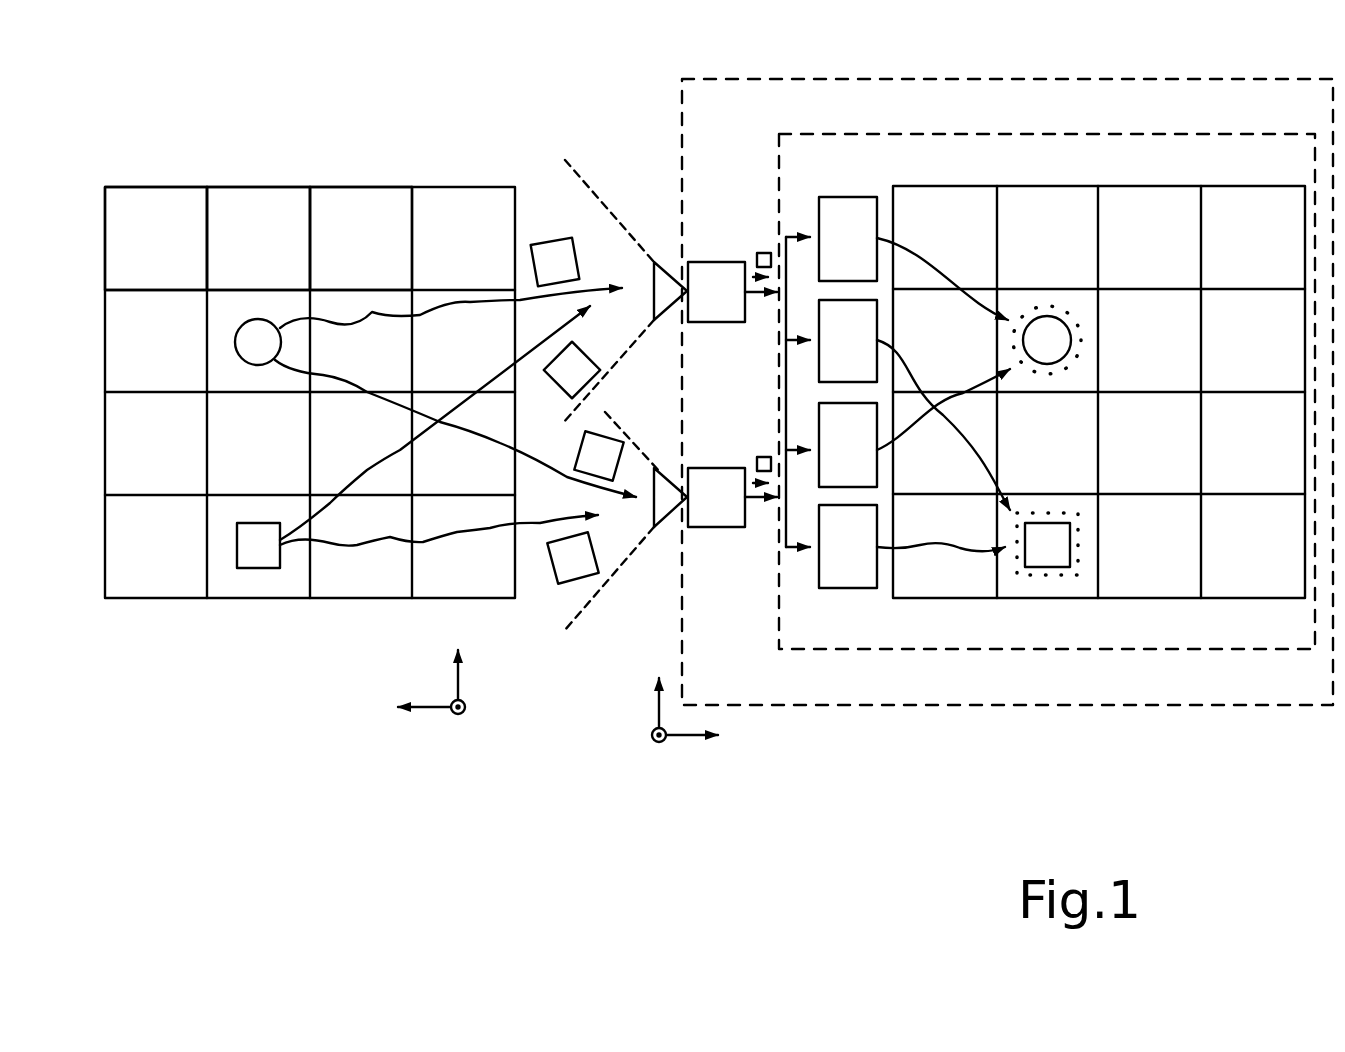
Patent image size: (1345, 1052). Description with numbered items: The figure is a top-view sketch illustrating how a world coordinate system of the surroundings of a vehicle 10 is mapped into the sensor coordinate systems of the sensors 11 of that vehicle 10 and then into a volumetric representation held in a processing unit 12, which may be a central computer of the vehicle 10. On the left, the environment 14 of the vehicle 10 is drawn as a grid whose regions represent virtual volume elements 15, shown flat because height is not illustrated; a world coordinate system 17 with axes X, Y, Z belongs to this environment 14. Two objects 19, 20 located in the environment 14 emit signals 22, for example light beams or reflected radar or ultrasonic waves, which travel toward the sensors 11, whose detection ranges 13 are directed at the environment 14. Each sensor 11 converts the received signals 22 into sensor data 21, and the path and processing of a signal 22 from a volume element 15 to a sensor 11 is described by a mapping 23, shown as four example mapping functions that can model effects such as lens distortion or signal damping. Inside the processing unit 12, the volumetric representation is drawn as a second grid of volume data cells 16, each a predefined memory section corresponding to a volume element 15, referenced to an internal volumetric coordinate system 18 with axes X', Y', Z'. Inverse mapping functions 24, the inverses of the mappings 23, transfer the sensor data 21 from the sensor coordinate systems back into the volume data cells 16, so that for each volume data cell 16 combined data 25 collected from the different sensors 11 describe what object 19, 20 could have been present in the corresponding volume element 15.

The vehicle 10 is at (932, 79).
The sensors 11 is at (727, 262).
The processing unit 12 is at (1090, 134).
The detection ranges 13 is at (612, 215).
The environment 14 is at (465, 186).
The volume elements 15 is at (156, 198).
The volume data cells 16 is at (948, 186).
The world coordinate system 17 is at (440, 732).
The internal volumetric coordinate system 18 is at (681, 770).
The object 19 is at (235, 342).
The object 20 is at (237, 552).
The sensor data 21 is at (762, 253).
The signals 22 is at (372, 312).
The mapping 23 is at (548, 243).
The inverse mapping functions 24 is at (848, 197).
The combined data 25 is at (1075, 315).